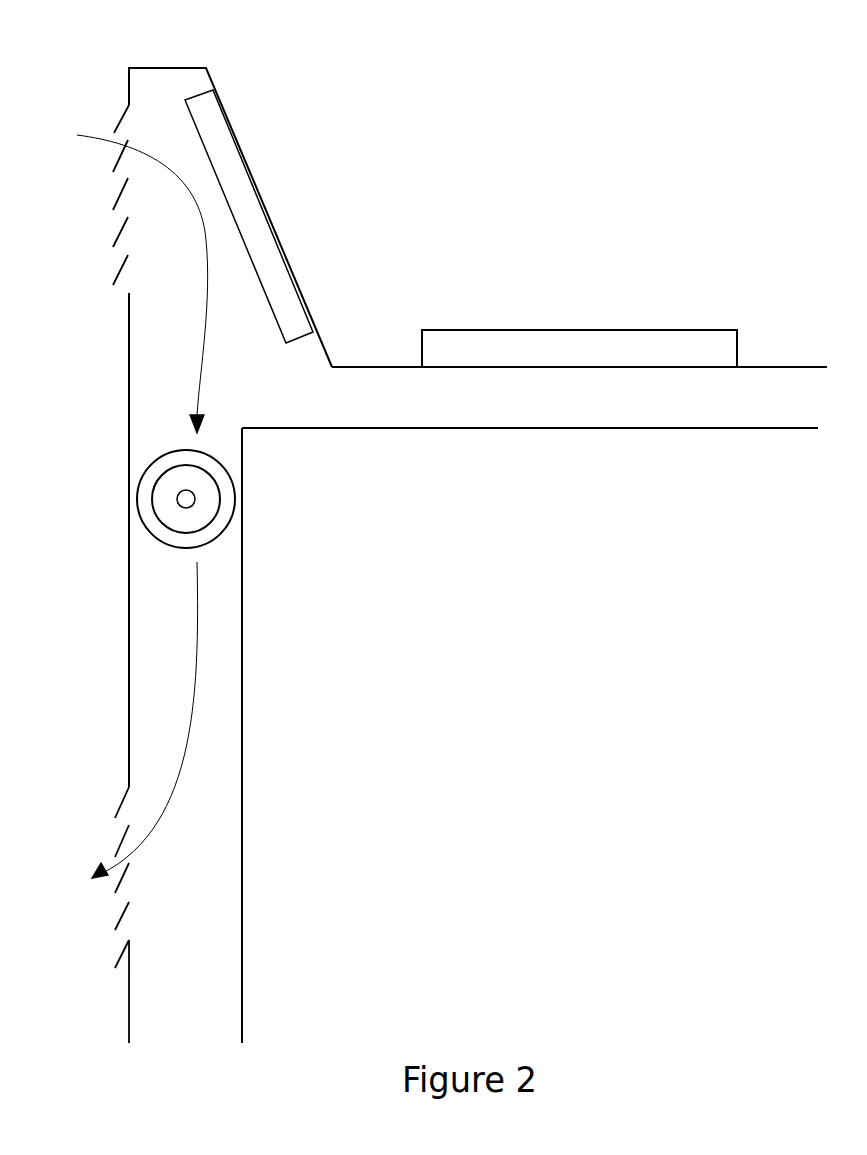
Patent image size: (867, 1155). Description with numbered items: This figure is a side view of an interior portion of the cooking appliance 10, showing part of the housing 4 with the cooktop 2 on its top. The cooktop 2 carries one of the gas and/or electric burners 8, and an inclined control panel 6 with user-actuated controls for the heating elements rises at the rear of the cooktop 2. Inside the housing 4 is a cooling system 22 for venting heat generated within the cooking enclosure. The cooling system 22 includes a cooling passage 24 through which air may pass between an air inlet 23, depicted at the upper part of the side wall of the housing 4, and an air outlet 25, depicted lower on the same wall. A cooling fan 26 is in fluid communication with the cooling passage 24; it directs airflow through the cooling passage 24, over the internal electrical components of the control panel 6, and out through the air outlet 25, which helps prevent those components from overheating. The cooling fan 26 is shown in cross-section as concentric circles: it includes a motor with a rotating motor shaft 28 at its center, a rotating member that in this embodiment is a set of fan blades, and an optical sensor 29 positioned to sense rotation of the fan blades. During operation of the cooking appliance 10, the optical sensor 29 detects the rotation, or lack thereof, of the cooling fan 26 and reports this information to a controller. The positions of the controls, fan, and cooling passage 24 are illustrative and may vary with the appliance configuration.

The cooking appliance 10 is at (430, 93).
The cooktop 2 is at (372, 367).
The burners 8 is at (567, 328).
The control panel 6 is at (252, 217).
The housing 4 is at (127, 432).
The air inlet 23 is at (122, 220).
The cooling passage 24 is at (222, 400).
The air outlet 25 is at (120, 933).
The cooling system 22 is at (80, 595).
The cooling fan 26 is at (230, 522).
The motor shaft 28 is at (180, 499).
The optical sensor 29 is at (197, 512).